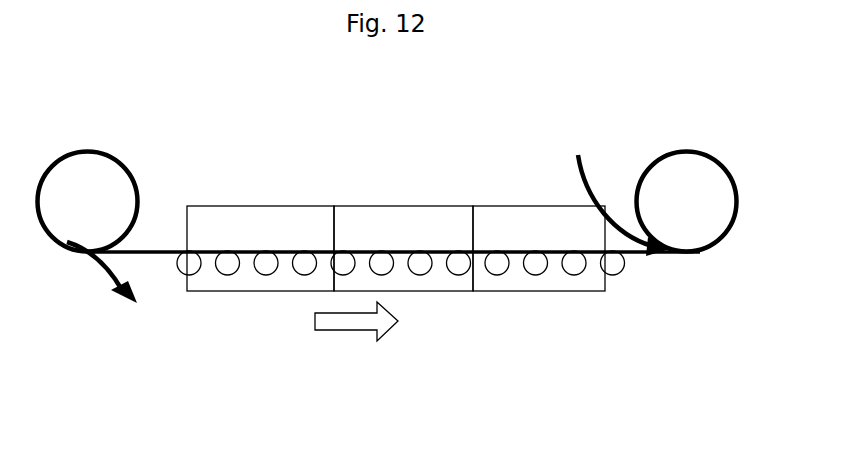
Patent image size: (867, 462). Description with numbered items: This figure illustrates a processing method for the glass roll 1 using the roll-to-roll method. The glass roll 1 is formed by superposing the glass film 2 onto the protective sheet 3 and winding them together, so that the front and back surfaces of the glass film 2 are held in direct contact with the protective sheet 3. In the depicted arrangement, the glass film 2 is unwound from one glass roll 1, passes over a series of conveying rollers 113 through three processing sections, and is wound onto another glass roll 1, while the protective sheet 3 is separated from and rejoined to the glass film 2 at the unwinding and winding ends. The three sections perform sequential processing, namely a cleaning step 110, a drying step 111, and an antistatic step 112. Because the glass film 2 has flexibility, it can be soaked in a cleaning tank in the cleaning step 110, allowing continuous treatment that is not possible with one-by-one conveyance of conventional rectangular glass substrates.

The glass roll 1 is at (100, 173).
The glass film 2 is at (147, 248).
The protective sheet 3 is at (110, 265).
The cleaning step 110 is at (248, 217).
The drying step 111 is at (375, 218).
The antistatic step 112 is at (498, 222).
The conveying rollers 113 is at (425, 268).